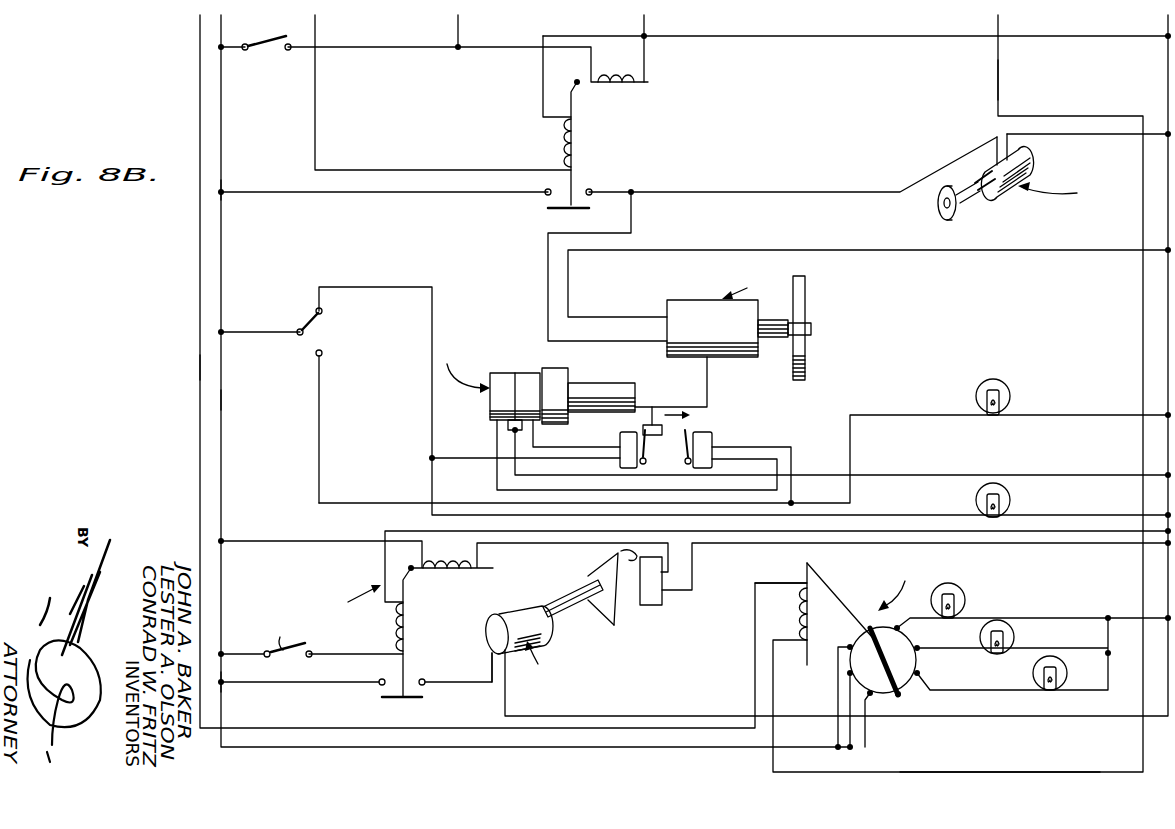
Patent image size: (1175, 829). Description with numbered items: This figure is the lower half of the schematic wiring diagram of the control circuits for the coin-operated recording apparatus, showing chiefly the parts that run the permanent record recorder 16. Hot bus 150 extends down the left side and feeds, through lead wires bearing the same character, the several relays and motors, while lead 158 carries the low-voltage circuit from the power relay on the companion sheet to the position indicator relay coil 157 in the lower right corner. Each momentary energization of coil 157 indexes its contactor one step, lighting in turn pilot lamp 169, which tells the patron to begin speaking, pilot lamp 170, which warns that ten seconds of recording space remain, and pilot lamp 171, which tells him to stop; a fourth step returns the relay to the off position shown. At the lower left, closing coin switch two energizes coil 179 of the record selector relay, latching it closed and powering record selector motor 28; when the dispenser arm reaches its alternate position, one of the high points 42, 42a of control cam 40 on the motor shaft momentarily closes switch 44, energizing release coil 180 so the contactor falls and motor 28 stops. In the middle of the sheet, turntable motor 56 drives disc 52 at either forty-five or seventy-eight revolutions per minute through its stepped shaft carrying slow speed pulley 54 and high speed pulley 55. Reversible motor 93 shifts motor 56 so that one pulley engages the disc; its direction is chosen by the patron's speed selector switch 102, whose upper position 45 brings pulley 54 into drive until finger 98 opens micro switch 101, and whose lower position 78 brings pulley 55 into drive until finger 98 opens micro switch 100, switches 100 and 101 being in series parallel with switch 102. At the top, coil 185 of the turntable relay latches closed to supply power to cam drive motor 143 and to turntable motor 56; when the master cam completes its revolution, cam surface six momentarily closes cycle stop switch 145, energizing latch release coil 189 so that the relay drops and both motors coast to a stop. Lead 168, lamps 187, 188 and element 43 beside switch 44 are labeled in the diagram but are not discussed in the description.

The cycle stop switch 145 is at (264, 40).
The latch release coil of turntable relay 189 is at (645, 86).
The turntable relay coil 185 is at (578, 162).
The main hot bus 150 is at (375, 196).
The conductor 168 is at (200, 367).
The lead 158 is at (998, 79).
The cam drive motor 143 is at (993, 188).
The speed selector control switch 102 is at (313, 312).
The upper switch position labeled 45 is at (335, 314).
The lower switch position labeled 78 is at (335, 423).
The reversible motor 93 is at (493, 418).
The micro switch 101 is at (618, 437).
The finger 98 is at (651, 436).
The micro switch 100 is at (705, 430).
The turntable motor 56 is at (667, 315).
The high speed driving pulley 55 is at (763, 338).
The disc 52 is at (805, 279).
The slow speed driving pulley 54 is at (806, 320).
The permanent record recorder 16 is at (835, 332).
The lamp 187 is at (992, 380).
The lamp 188 is at (1012, 500).
The release coil of record selector relay 180 is at (443, 578).
The record selector relay coil 179 is at (412, 633).
The record selector motor 28 is at (503, 612).
The control cam 40 is at (588, 580).
The high point of control cam 42 is at (610, 556).
The high point of control cam 42a is at (614, 625).
The contact 43 is at (626, 560).
The switch 44 is at (662, 600).
The position indicator relay coil 157 is at (804, 596).
The pilot lamp 169 is at (965, 598).
The pilot lamp 170 is at (1015, 637).
The pilot lamp 171 is at (1035, 677).